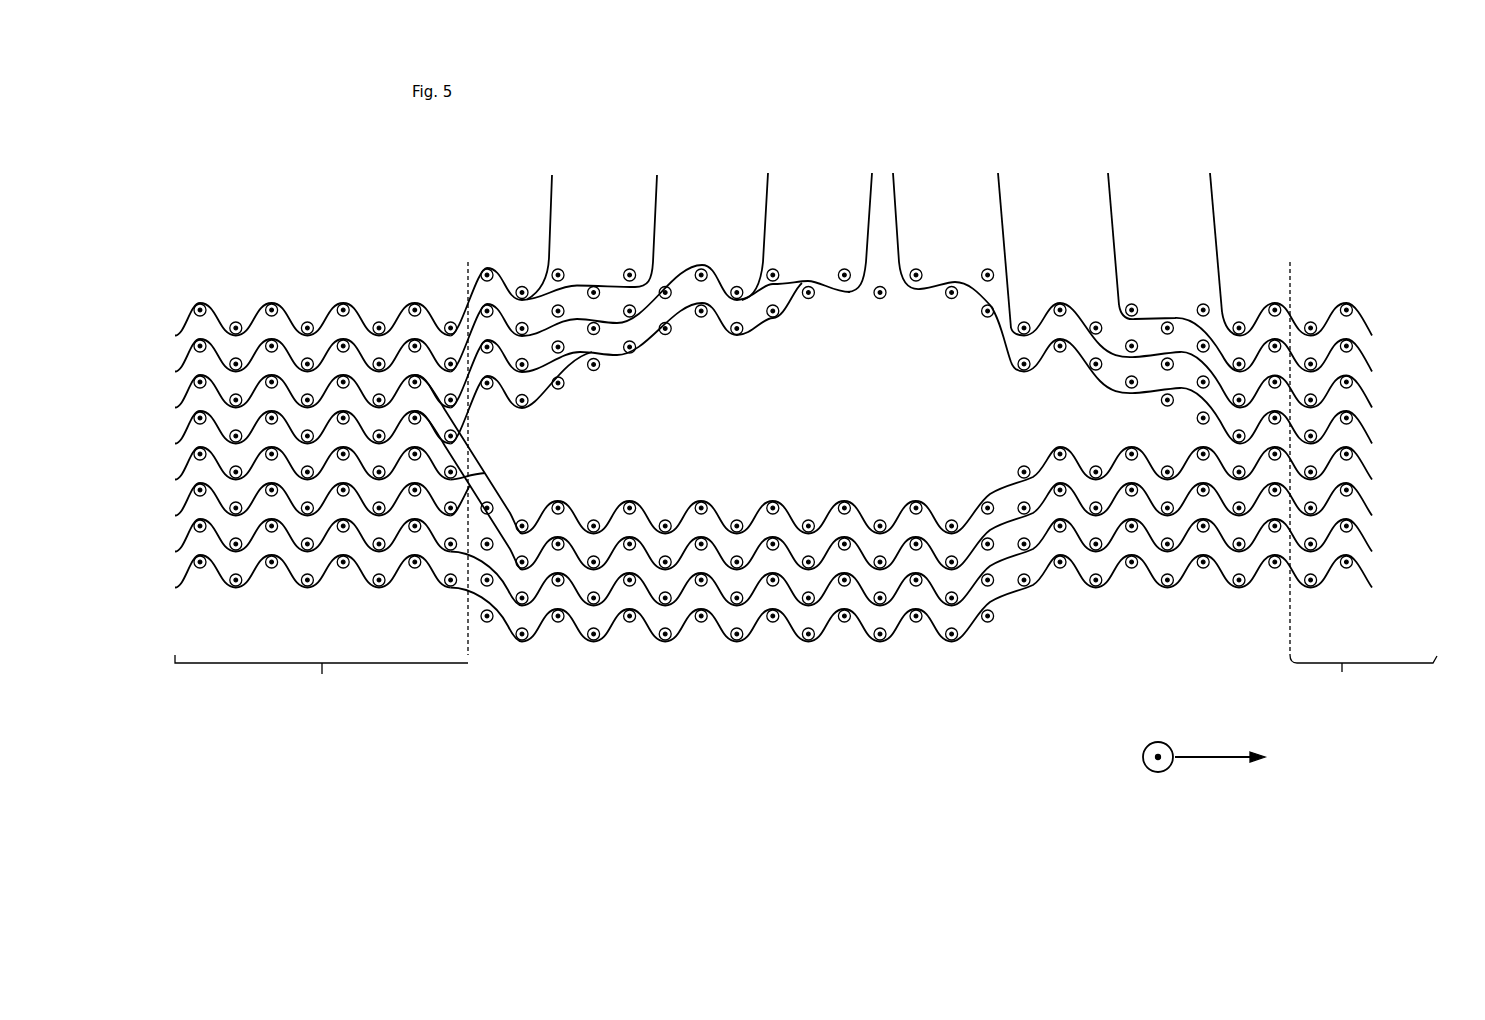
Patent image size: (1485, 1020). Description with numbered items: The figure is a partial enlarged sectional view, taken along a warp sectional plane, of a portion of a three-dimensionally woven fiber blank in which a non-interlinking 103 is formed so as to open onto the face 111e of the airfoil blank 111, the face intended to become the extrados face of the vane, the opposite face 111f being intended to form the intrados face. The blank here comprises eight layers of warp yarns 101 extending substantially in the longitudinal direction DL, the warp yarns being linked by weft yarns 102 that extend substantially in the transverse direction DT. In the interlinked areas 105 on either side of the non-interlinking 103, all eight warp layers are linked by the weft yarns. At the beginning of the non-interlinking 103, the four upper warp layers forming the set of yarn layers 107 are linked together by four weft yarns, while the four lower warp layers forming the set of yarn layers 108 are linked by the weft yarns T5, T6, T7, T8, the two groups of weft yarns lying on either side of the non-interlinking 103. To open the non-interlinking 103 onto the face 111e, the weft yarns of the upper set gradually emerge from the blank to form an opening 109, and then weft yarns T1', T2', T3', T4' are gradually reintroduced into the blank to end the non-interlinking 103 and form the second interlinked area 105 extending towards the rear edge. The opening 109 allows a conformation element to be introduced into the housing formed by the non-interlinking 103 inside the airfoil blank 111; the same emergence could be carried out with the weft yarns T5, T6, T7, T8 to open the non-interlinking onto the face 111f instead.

The warp yarns 101 is at (492, 453).
The weft yarns 102 is at (253, 333).
The non-interlinked area 103 is at (871, 429).
The interlinked areas 105 is at (785, 481).
The set of yarn layers 107 is at (1383, 305).
The set of yarn layers 108 is at (1383, 446).
The opening 109 is at (880, 190).
The airfoil blank 111 is at (887, 208).
The face of the airfoil blank 111e is at (418, 275).
The face of the airfoil blank 111f is at (372, 600).
The weft yarn T5 is at (177, 464).
The weft yarn T6 is at (177, 500).
The weft yarn T7 is at (177, 536).
The weft yarn T8 is at (177, 572).
The weft yarn T1' is at (1235, 242).
The weft yarn T2' is at (1132, 239).
The weft yarn T3' is at (1023, 250).
The weft yarn T4' is at (918, 231).
The transverse direction DT is at (1234, 758).
The longitudinal direction DL is at (1158, 770).